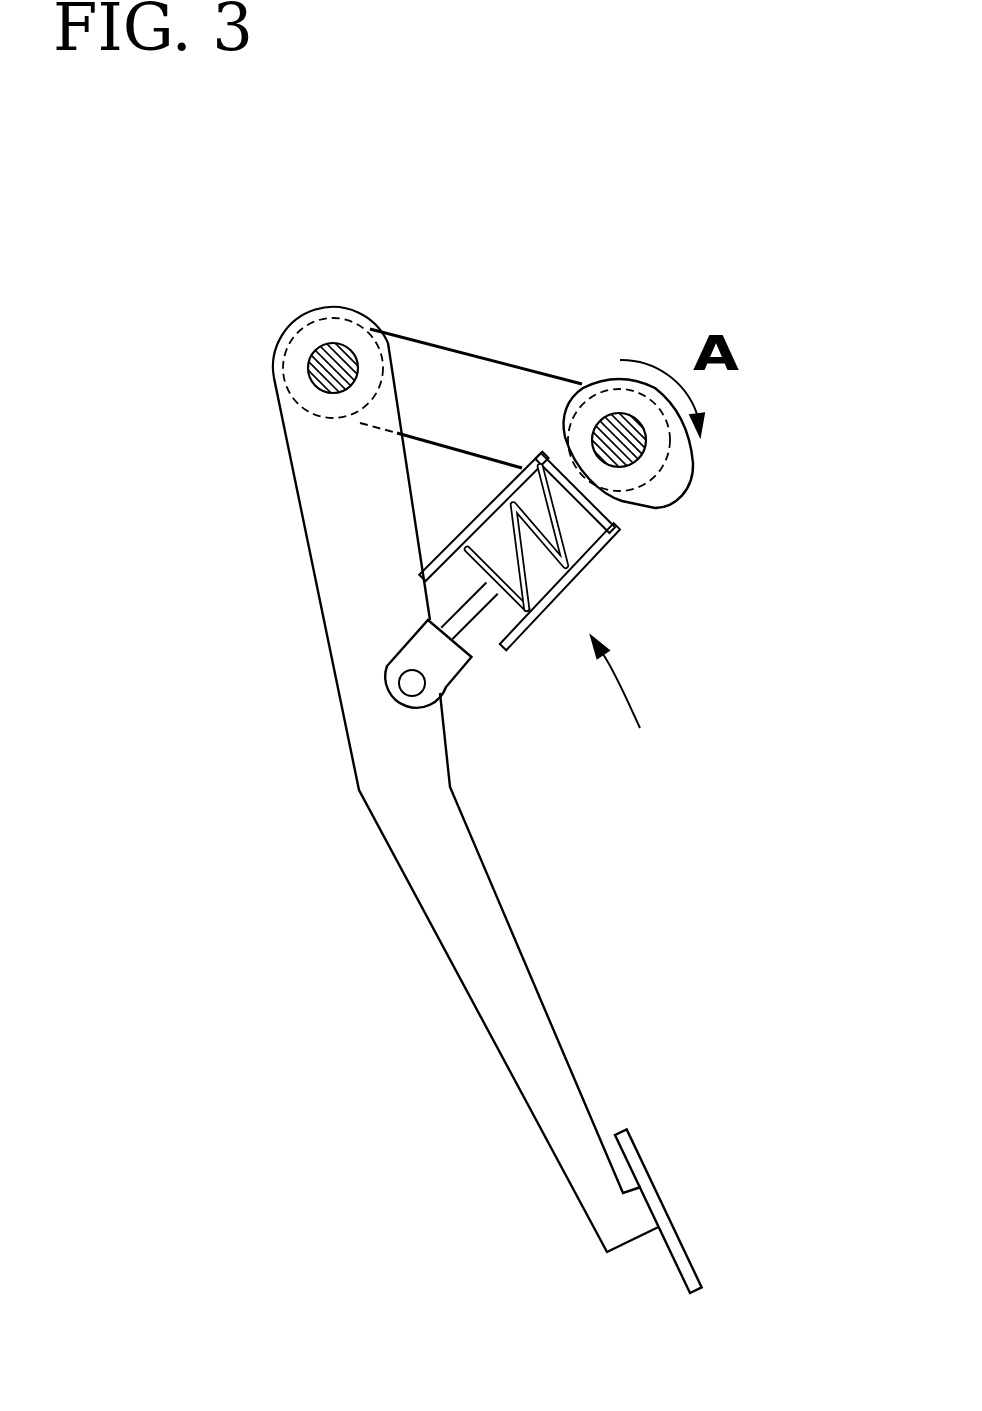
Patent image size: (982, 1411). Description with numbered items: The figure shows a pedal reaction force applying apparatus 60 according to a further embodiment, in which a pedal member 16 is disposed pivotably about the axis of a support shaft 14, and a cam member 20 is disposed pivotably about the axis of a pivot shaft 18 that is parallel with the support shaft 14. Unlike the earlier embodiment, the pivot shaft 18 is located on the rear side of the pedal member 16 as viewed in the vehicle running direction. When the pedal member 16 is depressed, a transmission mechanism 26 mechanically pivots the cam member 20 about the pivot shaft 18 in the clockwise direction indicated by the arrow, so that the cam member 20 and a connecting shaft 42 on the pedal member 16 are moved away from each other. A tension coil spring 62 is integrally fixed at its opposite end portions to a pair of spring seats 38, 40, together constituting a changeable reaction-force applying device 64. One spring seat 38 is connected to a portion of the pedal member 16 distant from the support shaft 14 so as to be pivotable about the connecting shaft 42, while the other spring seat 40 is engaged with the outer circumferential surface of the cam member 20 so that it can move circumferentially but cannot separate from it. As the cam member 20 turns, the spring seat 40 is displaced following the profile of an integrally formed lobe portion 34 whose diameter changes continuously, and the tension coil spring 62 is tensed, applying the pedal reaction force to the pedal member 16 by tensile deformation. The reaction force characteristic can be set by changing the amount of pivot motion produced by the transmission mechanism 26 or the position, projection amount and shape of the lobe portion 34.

The support shaft 14 is at (334, 362).
The pedal member 16 is at (504, 962).
The pivot shaft 18 is at (640, 452).
The cam member 20 is at (590, 410).
The transmission mechanism 26 is at (472, 297).
The lobe portion 34 is at (672, 485).
The spring seat 38 is at (499, 658).
The spring seat 40 is at (620, 512).
The connecting shaft 42 is at (418, 684).
The pedal reaction force applying apparatus 60 is at (570, 236).
The tension coil spring 62 is at (578, 570).
The changeable reaction-force applying device 64 is at (646, 701).